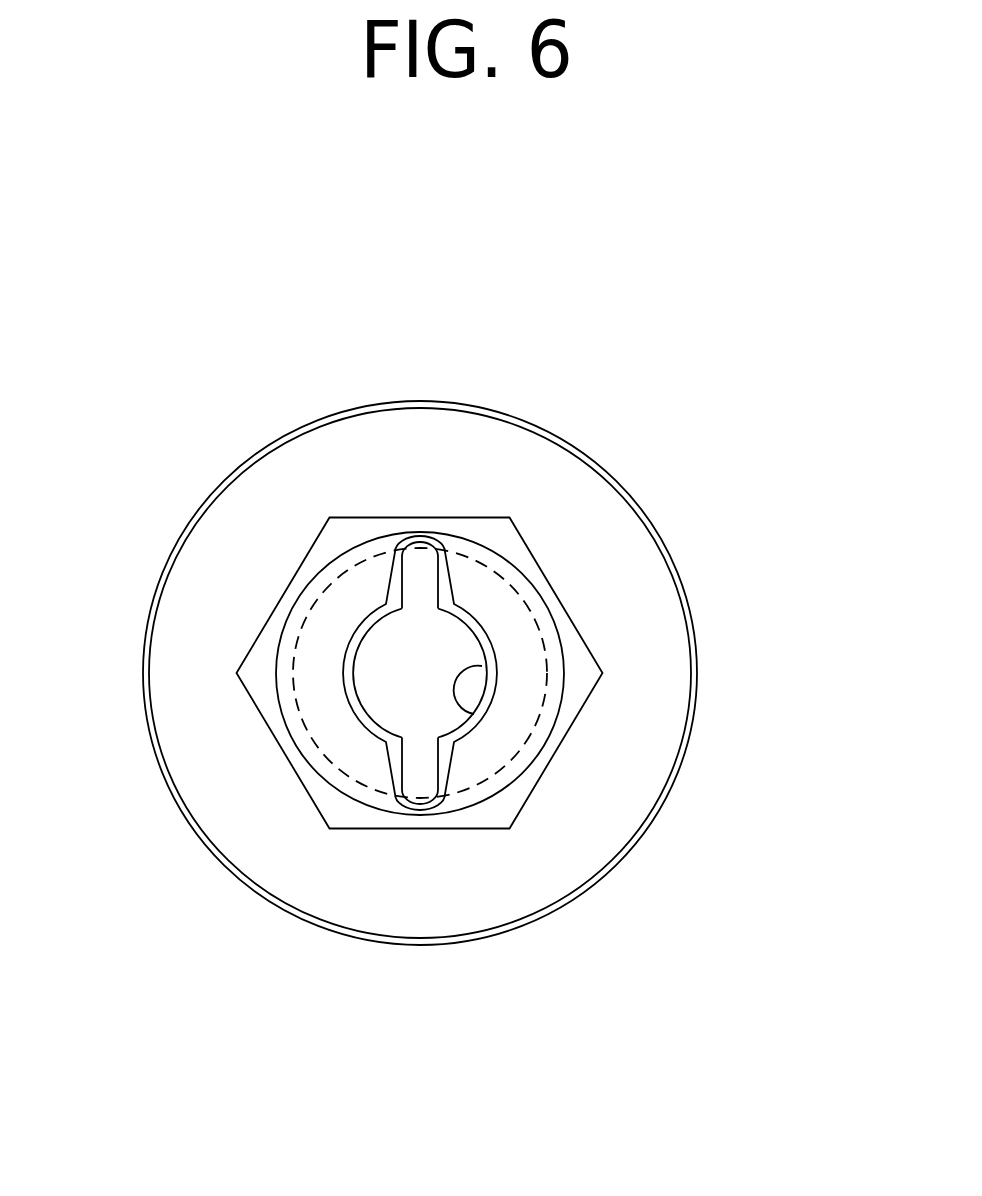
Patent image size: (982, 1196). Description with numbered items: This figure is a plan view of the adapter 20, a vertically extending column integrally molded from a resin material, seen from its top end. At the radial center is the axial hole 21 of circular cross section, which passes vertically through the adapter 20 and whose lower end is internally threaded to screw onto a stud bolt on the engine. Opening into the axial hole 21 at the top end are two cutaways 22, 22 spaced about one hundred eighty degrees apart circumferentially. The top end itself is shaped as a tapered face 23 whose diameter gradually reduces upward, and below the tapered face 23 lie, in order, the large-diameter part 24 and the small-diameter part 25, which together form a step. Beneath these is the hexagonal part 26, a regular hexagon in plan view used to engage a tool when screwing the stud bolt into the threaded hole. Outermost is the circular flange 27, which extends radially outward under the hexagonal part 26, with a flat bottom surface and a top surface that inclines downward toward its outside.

The adapter 20 is at (151, 438).
The axial hole 21 is at (468, 716).
The cutaway 22 is at (413, 558).
The tapered face 23 is at (493, 590).
The large-diameter part 24 is at (565, 658).
The small-diameter part 25 is at (299, 630).
The hexagonal part 26 is at (291, 765).
The flange 27 is at (673, 560).